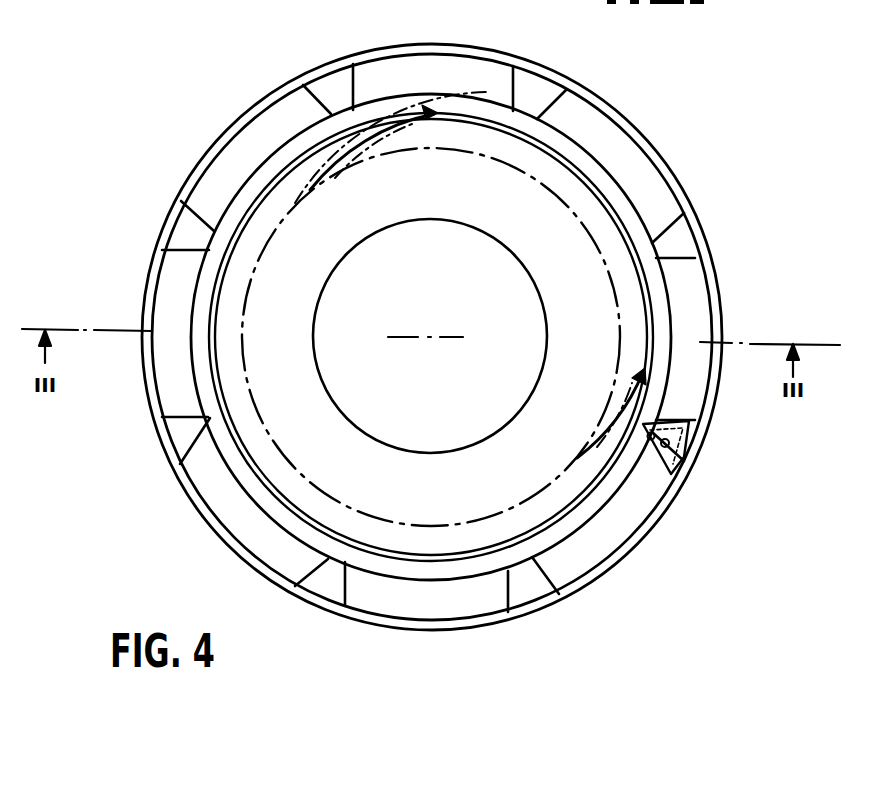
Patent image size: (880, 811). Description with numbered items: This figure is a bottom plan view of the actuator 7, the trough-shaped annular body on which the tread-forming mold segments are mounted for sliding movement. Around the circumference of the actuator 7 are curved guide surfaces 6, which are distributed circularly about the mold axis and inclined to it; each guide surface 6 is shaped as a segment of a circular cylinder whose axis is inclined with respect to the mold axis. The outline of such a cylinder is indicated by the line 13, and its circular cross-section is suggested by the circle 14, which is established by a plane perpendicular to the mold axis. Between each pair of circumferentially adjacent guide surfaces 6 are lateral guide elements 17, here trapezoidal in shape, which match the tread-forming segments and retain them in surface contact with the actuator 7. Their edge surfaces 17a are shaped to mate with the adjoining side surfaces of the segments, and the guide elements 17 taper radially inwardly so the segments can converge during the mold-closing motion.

The guide surfaces 6 is at (243, 110).
The actuator 7 is at (165, 167).
The line 13 is at (600, 440).
The circle 14 is at (487, 508).
The lateral guide elements 17 is at (337, 70).
The edge surfaces 17a is at (690, 416).